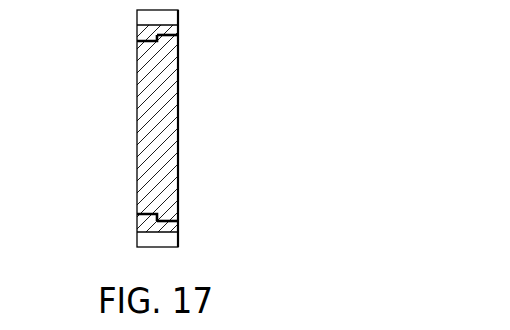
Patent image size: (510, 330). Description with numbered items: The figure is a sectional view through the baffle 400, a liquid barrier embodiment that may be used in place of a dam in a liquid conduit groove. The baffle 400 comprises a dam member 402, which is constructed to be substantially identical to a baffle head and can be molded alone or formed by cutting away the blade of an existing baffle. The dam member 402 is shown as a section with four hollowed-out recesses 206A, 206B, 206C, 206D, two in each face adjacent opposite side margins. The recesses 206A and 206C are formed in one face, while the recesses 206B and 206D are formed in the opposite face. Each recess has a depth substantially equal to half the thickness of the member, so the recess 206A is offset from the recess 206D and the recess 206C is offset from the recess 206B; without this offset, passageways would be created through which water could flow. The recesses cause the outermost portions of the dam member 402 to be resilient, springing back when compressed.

The baffle 400 is at (228, 150).
The dam member 402 is at (158, 132).
The recess 206A is at (178, 36).
The recess 206B is at (137, 213).
The recess 206C is at (178, 222).
The recess 206D is at (137, 41).